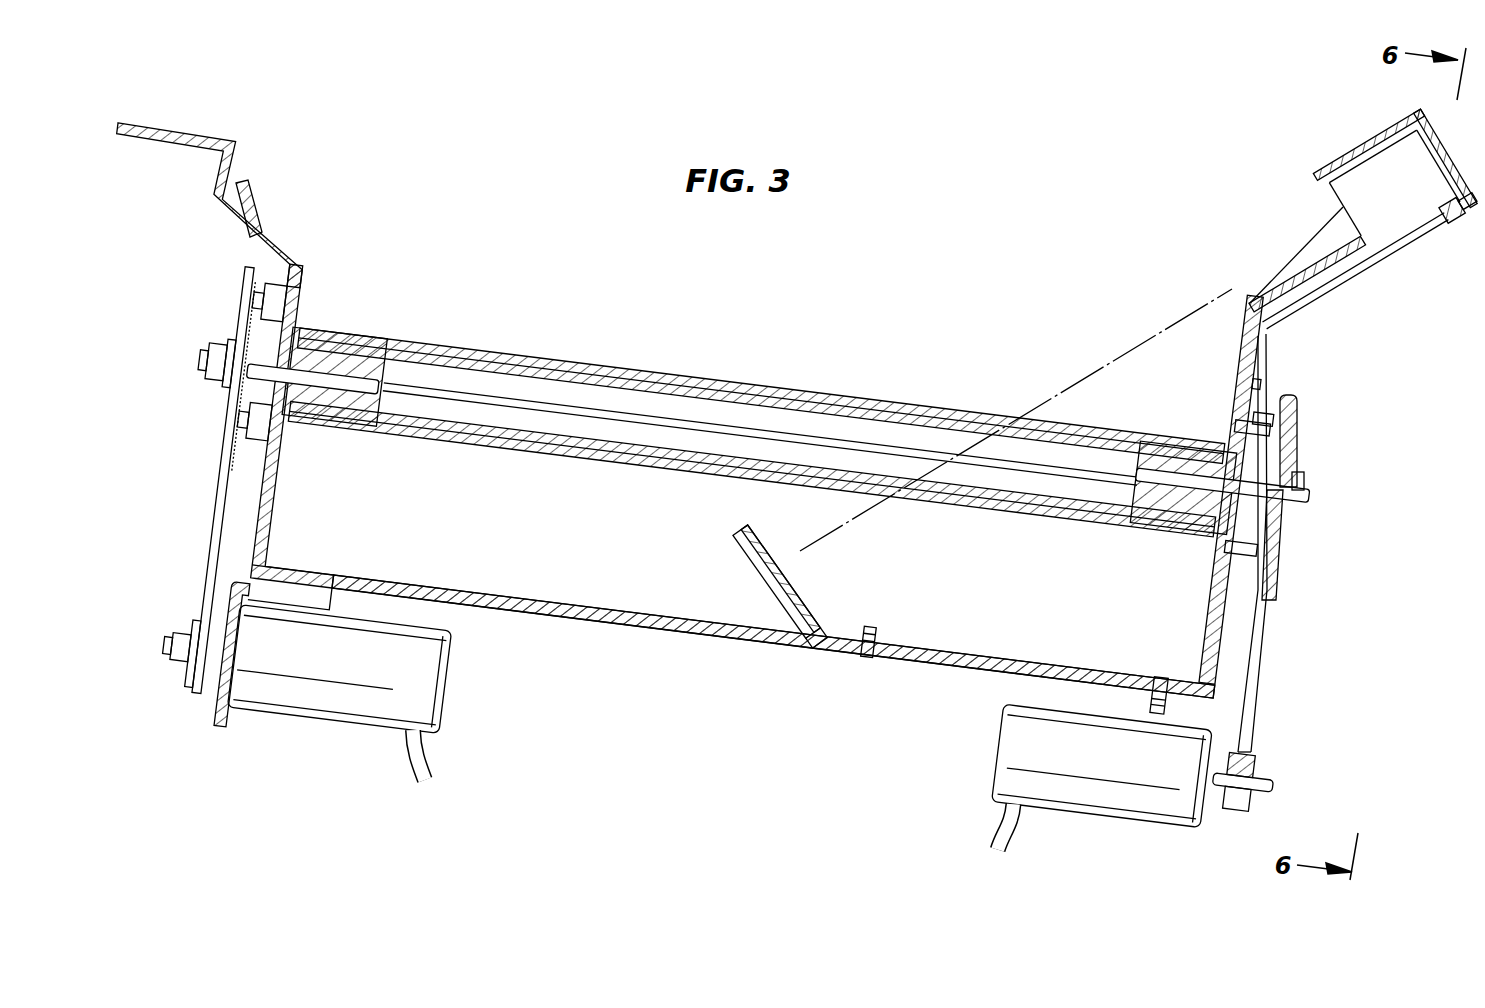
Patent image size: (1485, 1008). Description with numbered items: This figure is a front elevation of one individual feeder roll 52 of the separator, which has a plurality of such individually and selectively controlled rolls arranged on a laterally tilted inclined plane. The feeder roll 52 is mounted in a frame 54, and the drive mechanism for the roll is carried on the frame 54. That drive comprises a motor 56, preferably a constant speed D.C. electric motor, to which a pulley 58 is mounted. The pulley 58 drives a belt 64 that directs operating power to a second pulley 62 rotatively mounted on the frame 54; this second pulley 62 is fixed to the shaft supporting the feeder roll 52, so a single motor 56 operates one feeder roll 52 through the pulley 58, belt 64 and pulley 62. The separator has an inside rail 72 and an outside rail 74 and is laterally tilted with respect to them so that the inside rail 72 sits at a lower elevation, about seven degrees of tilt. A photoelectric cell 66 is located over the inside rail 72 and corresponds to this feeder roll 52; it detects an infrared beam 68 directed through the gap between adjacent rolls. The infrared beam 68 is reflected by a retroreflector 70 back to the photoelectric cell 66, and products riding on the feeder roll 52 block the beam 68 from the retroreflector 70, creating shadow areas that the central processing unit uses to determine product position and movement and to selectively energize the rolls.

The feeder roll 52 is at (713, 377).
The frame 54 is at (618, 622).
The motor 56 is at (1083, 808).
The pulley 58 is at (1272, 782).
The second pulley 62 is at (1293, 450).
The belt 64 is at (1263, 667).
The photoelectric cell 66 is at (1342, 207).
The infrared beam 68 is at (1068, 392).
The retroreflector 70 is at (803, 593).
The inside rail 72 is at (1237, 395).
The outside rail 74 is at (300, 302).